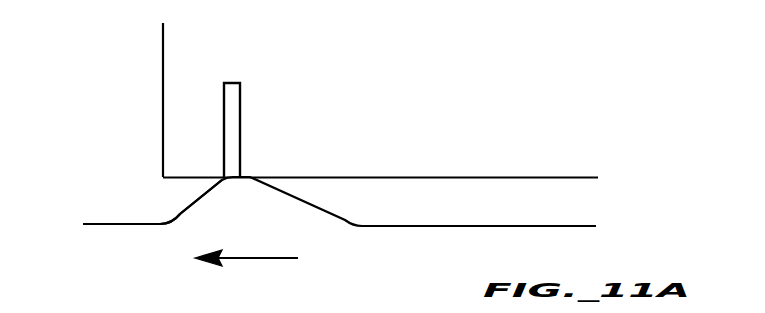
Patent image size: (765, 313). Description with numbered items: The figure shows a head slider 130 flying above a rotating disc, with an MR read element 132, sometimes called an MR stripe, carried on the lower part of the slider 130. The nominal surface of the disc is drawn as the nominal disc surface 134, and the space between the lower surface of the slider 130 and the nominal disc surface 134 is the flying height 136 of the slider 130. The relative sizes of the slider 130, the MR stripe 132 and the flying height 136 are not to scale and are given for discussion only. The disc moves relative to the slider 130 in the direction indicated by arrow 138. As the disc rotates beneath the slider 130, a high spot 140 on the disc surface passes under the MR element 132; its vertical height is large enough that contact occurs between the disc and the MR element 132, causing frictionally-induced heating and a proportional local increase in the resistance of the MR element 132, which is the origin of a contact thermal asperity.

The head slider 130 is at (163, 78).
The MR read element 132 is at (240, 140).
The nominal disc surface 134 is at (112, 223).
The flying height 136 is at (412, 187).
The arrow 138 is at (230, 258).
The high spot 140 is at (175, 217).